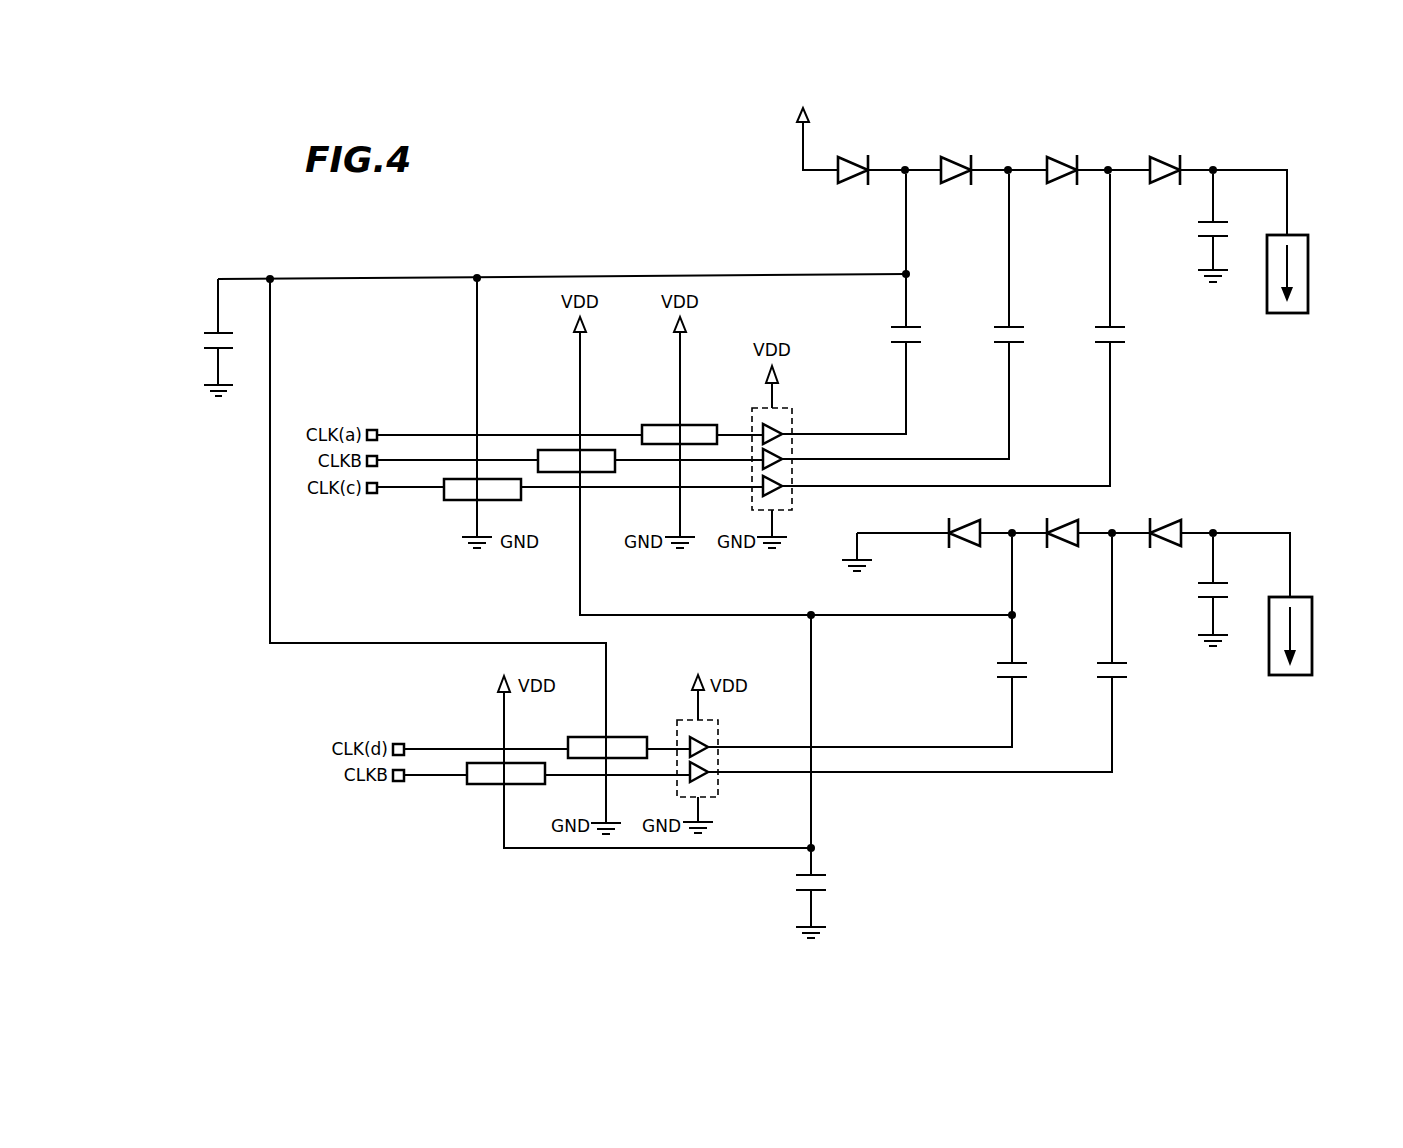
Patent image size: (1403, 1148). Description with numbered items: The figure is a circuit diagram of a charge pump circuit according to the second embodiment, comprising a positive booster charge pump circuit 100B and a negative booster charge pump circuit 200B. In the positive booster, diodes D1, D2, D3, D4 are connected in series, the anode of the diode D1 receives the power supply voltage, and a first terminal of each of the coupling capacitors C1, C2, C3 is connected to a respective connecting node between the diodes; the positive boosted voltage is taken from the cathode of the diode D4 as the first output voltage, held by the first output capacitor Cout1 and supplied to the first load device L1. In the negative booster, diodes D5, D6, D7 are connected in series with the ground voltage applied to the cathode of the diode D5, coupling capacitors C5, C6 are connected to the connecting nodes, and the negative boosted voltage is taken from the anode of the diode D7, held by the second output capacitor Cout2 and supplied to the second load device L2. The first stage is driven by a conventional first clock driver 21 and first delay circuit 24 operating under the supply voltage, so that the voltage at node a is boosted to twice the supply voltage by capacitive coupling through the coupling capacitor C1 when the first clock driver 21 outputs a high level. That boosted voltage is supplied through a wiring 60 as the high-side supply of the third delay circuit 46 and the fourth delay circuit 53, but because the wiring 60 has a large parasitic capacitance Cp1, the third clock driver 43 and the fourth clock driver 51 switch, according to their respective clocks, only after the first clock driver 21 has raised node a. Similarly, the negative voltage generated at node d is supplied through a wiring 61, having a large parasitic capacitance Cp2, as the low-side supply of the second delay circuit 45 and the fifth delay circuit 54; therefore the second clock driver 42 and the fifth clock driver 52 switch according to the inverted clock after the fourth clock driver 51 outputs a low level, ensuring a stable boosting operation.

The positive booster charge pump circuit 100B is at (1235, 147).
The negative booster charge pump circuit 200B is at (982, 790).
The wiring 60 is at (745, 273).
The wiring 61 is at (685, 614).
The first clock driver 21 is at (786, 426).
The second clock driver 42 is at (785, 461).
The third clock driver 43 is at (782, 492).
The first delay circuit 24 is at (667, 425).
The second delay circuit 45 is at (557, 450).
The third delay circuit 46 is at (446, 492).
The fourth clock driver 51 is at (712, 741).
The fifth clock driver 52 is at (708, 779).
The fourth delay circuit 53 is at (630, 737).
The fifth delay circuit 54 is at (483, 786).
The diode D1 is at (852, 150).
The diode D2 is at (954, 150).
The diode D3 is at (1058, 150).
The diode D4 is at (1163, 152).
The diode D5 is at (962, 549).
The diode D6 is at (1063, 549).
The diode D7 is at (1166, 549).
The coupling capacitor C1 is at (924, 341).
The coupling capacitor C2 is at (1027, 341).
The coupling capacitor C3 is at (1129, 341).
The coupling capacitor C5 is at (997, 673).
The coupling capacitor C6 is at (1097, 673).
The first output capacitor Cout1 is at (1196, 236).
The second output capacitor Cout2 is at (1198, 598).
The parasitic capacitance Cp1 is at (206, 331).
The parasitic capacitance Cp2 is at (795, 883).
The first load device L1 is at (1310, 303).
The second load device L2 is at (1320, 664).